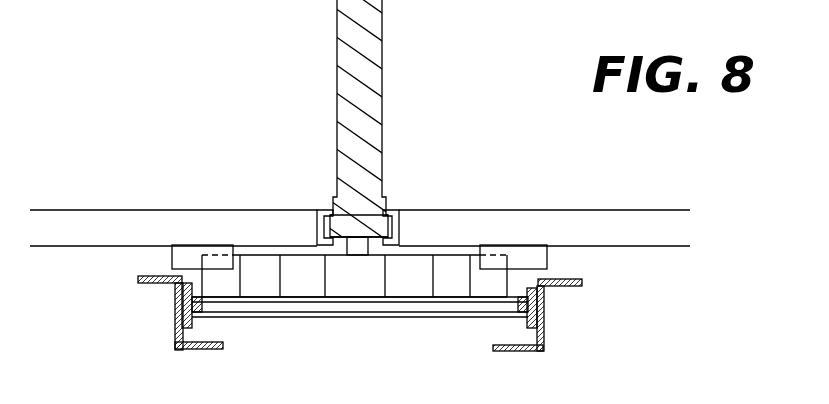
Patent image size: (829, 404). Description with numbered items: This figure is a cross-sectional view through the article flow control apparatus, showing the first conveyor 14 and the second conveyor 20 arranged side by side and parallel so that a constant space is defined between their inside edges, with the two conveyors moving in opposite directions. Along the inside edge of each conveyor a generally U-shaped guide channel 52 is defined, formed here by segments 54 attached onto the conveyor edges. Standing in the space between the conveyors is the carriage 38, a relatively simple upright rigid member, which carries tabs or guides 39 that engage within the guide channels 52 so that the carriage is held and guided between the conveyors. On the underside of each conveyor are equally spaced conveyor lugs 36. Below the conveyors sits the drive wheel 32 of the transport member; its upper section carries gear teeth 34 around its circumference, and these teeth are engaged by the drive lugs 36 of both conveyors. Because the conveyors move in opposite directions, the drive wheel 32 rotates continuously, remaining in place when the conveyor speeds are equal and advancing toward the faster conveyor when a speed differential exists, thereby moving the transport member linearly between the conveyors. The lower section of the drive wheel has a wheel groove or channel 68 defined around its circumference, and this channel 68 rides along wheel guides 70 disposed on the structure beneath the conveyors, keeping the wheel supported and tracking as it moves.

The first conveyor 14 is at (182, 223).
The second conveyor 20 is at (578, 228).
The drive wheel 32 is at (345, 316).
The gear teeth 34 is at (290, 277).
The conveyor lugs 36 is at (173, 257).
The carriage 38 is at (363, 33).
The tabs or guides 39 is at (363, 222).
The guide channel 52 is at (323, 213).
The channel segments 54 is at (400, 228).
The wheel groove or channel 68 is at (447, 305).
The wheel guides 70 is at (215, 310).